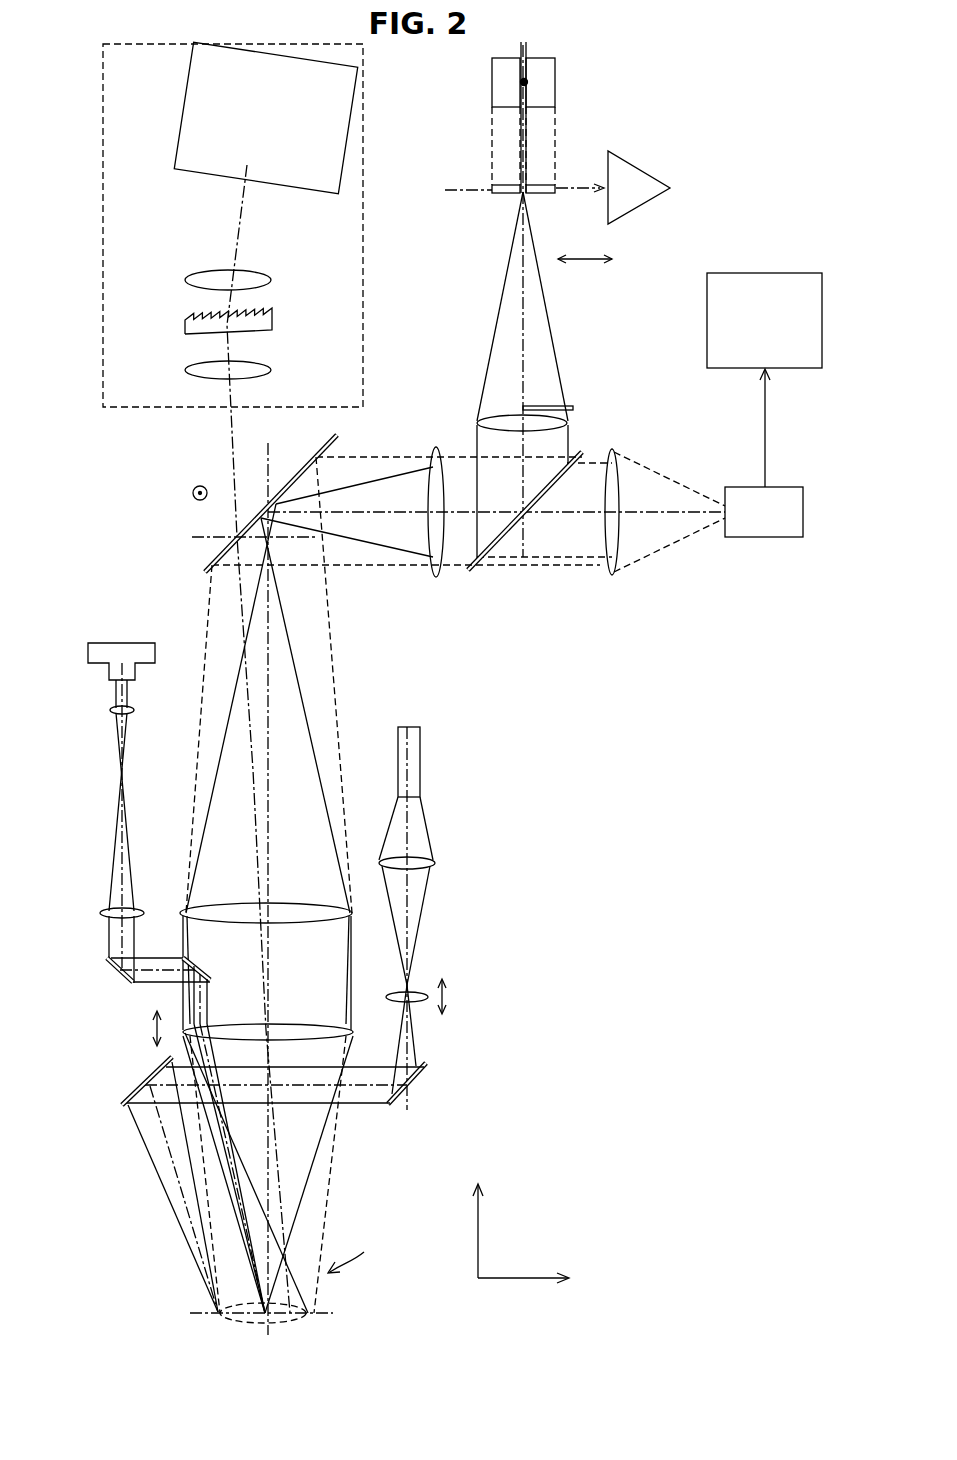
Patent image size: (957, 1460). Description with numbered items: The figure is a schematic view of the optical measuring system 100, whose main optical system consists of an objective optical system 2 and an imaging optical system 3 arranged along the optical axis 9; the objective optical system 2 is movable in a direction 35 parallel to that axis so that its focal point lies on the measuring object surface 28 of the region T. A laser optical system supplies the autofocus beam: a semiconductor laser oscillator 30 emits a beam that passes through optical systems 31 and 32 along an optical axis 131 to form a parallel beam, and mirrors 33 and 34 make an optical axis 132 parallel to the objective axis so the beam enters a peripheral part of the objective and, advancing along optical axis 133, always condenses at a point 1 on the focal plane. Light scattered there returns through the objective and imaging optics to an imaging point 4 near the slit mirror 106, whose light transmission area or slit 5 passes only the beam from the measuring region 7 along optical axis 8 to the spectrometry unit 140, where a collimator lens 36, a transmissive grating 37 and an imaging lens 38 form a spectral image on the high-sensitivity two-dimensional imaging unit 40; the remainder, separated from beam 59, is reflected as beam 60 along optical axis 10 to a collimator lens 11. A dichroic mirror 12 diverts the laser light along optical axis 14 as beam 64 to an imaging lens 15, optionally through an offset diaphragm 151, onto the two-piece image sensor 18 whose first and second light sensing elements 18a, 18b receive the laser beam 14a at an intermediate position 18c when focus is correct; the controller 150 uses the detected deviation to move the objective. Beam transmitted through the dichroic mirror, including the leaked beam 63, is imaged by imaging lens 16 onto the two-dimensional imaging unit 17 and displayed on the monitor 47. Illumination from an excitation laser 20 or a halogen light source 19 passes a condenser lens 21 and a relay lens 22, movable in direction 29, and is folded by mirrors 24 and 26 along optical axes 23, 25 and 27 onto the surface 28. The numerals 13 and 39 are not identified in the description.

The point 1 is at (267, 1328).
The objective optical system 2 is at (302, 1023).
The imaging optical system 3 is at (300, 904).
The imaging point 4 is at (272, 540).
The slit 5 is at (240, 533).
The measuring region 7 is at (298, 1323).
The optical axis 8 is at (252, 737).
The optical axis 9 is at (272, 698).
The optical axis 10 is at (397, 514).
The collimator lens 11 is at (437, 579).
The dichroic mirror 12 is at (471, 576).
The optical axis 13 is at (570, 520).
The optical axis 14 is at (522, 340).
The laser beam 14a is at (528, 83).
The imaging lens 15 is at (570, 425).
The imaging lens 16 is at (612, 577).
The two-dimensional imaging unit 17 is at (762, 539).
The two-piece image sensor 18 is at (524, 134).
The first light sensing element 18a is at (491, 70).
The second light sensing element 18b is at (556, 70).
The intermediate position 18c is at (524, 44).
The halogen light source 19 is at (452, 793).
The excitation laser 20 is at (422, 763).
The condenser lens 21 is at (436, 865).
The relay lens 22 is at (424, 990).
The optical axis 23 is at (417, 899).
The mirror 24 is at (428, 1066).
The optical axis 25 is at (368, 1088).
The mirror 26 is at (116, 1107).
The optical axis 27 is at (172, 1132).
The measuring object surface 28 is at (237, 1320).
The direction 29 is at (446, 996).
The semiconductor laser oscillator 30 is at (86, 656).
The optical system 31 is at (110, 712).
The optical system 32 is at (100, 913).
The mirror 33 is at (106, 969).
The mirror 34 is at (209, 963).
The direction 35 is at (153, 1034).
The collimator lens 36 is at (186, 372).
The transmissive grating 37 is at (186, 328).
The imaging lens 38 is at (186, 278).
The optical axis 39 is at (243, 196).
The high-sensitivity two-dimensional imaging unit 40 is at (186, 102).
The monitor 47 is at (765, 272).
The beam 59 is at (297, 653).
The beam 60 is at (407, 470).
The leaked and transmitted beam 63 is at (636, 466).
The beam 64 is at (505, 289).
The optical measuring system 100 is at (484, 694).
The slit mirror 106 is at (276, 474).
The optical axis 131 is at (120, 938).
The optical axis 132 is at (183, 995).
The optical axis 133 is at (211, 1134).
The spectrometry unit 140 is at (366, 135).
The controller 150 is at (634, 167).
The diaphragm 151 is at (575, 408).